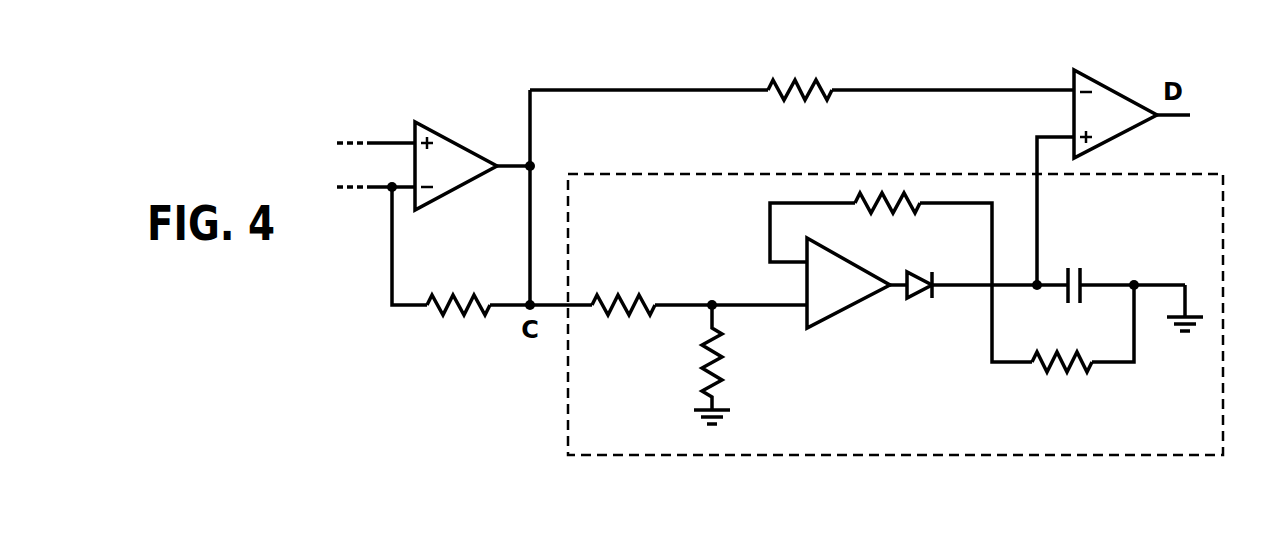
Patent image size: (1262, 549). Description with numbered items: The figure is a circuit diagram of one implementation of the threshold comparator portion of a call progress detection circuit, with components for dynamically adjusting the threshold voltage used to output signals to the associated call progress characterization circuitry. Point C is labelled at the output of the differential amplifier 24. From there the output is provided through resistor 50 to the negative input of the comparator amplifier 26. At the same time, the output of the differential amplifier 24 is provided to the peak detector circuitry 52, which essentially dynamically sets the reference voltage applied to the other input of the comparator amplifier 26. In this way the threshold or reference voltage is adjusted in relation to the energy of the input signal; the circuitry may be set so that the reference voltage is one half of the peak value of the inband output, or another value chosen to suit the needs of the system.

The differential amplifier 24 is at (453, 160).
The comparator amplifier 26 is at (1111, 106).
The resistor 50 is at (804, 100).
The peak detector circuitry 52 is at (1223, 462).